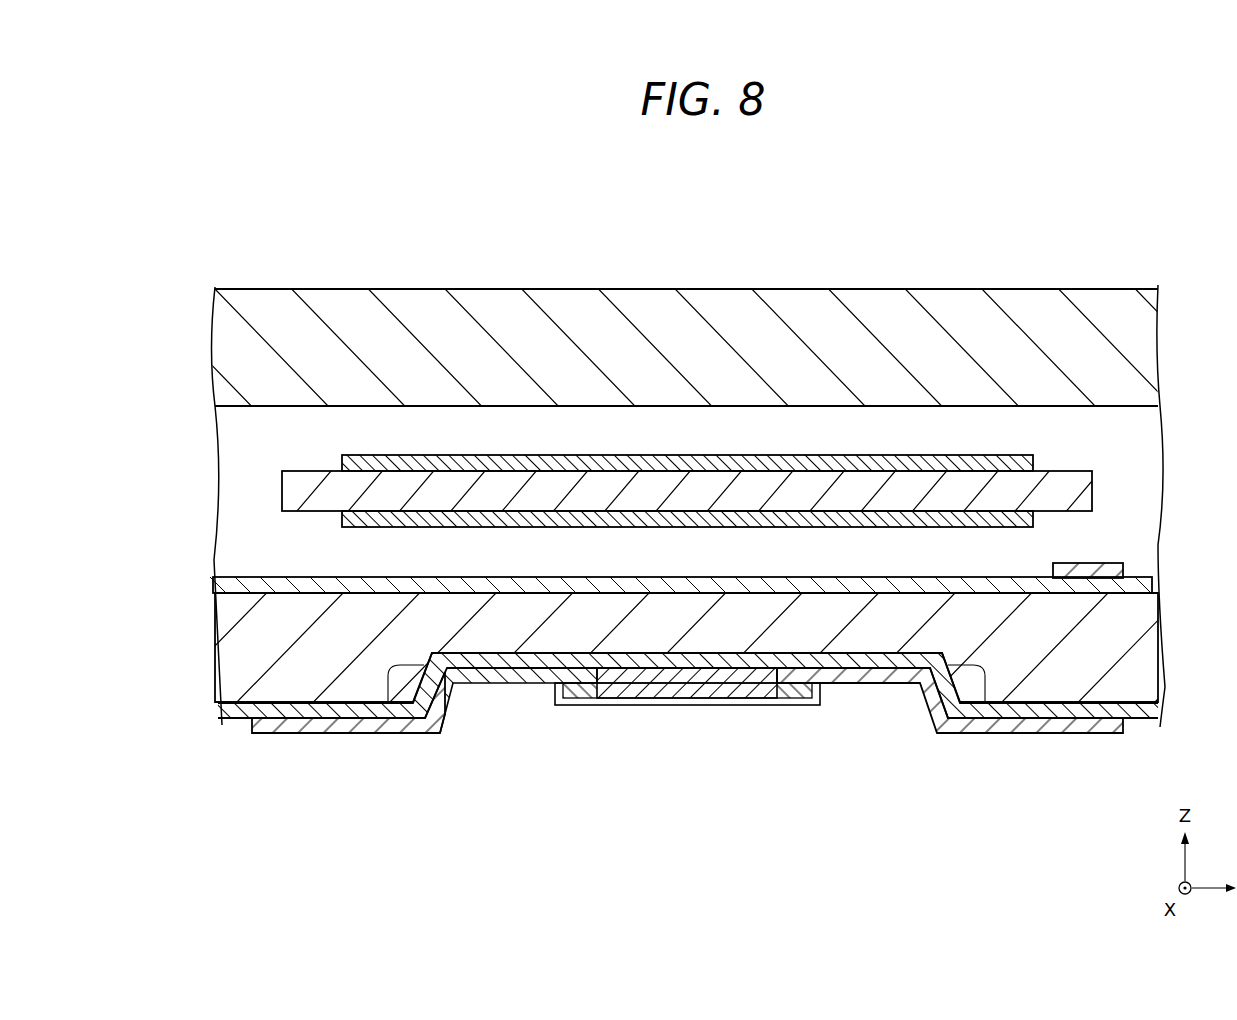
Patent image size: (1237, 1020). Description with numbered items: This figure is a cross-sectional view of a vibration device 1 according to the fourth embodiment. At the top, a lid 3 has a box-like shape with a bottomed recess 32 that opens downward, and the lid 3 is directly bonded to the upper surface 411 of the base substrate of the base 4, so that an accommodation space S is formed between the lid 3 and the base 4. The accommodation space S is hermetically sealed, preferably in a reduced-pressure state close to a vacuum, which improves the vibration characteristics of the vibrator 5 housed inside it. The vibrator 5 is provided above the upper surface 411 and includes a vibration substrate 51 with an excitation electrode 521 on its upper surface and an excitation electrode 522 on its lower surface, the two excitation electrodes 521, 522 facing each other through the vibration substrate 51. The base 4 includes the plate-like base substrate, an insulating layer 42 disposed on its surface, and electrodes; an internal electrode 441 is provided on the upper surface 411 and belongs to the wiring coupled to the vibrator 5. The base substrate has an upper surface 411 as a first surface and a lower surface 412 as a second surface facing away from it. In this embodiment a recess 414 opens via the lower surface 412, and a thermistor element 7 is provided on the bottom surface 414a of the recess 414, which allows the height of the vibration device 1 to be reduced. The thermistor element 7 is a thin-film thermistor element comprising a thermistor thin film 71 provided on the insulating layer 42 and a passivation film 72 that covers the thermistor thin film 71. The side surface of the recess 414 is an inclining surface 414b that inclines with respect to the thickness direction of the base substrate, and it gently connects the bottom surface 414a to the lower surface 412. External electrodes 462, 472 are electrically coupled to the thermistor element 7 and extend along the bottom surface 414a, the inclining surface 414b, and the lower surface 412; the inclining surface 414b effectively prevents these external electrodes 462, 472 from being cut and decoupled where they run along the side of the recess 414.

The vibration device 1 is at (1154, 211).
The lid 3 is at (516, 352).
The recess 32 is at (404, 406).
The accommodation space S is at (262, 445).
The base 4 is at (685, 649).
The upper surface 411 is at (295, 576).
The lower surface 412 is at (305, 708).
The recess 414 is at (688, 721).
The bottom surface 414a is at (517, 662).
The inclining surface 414b is at (388, 704).
The insulating layer 42 is at (848, 582).
The internal electrode 441 is at (1082, 566).
The external electrode 462 is at (262, 729).
The external electrode 472 is at (1075, 731).
The vibrator 5 is at (699, 380).
The vibration substrate 51 is at (1007, 490).
The excitation electrode 521 is at (957, 455).
The excitation electrode 522 is at (817, 510).
The thermistor element 7 is at (687, 729).
The thermistor thin film 71 is at (735, 681).
The passivation film 72 is at (600, 696).